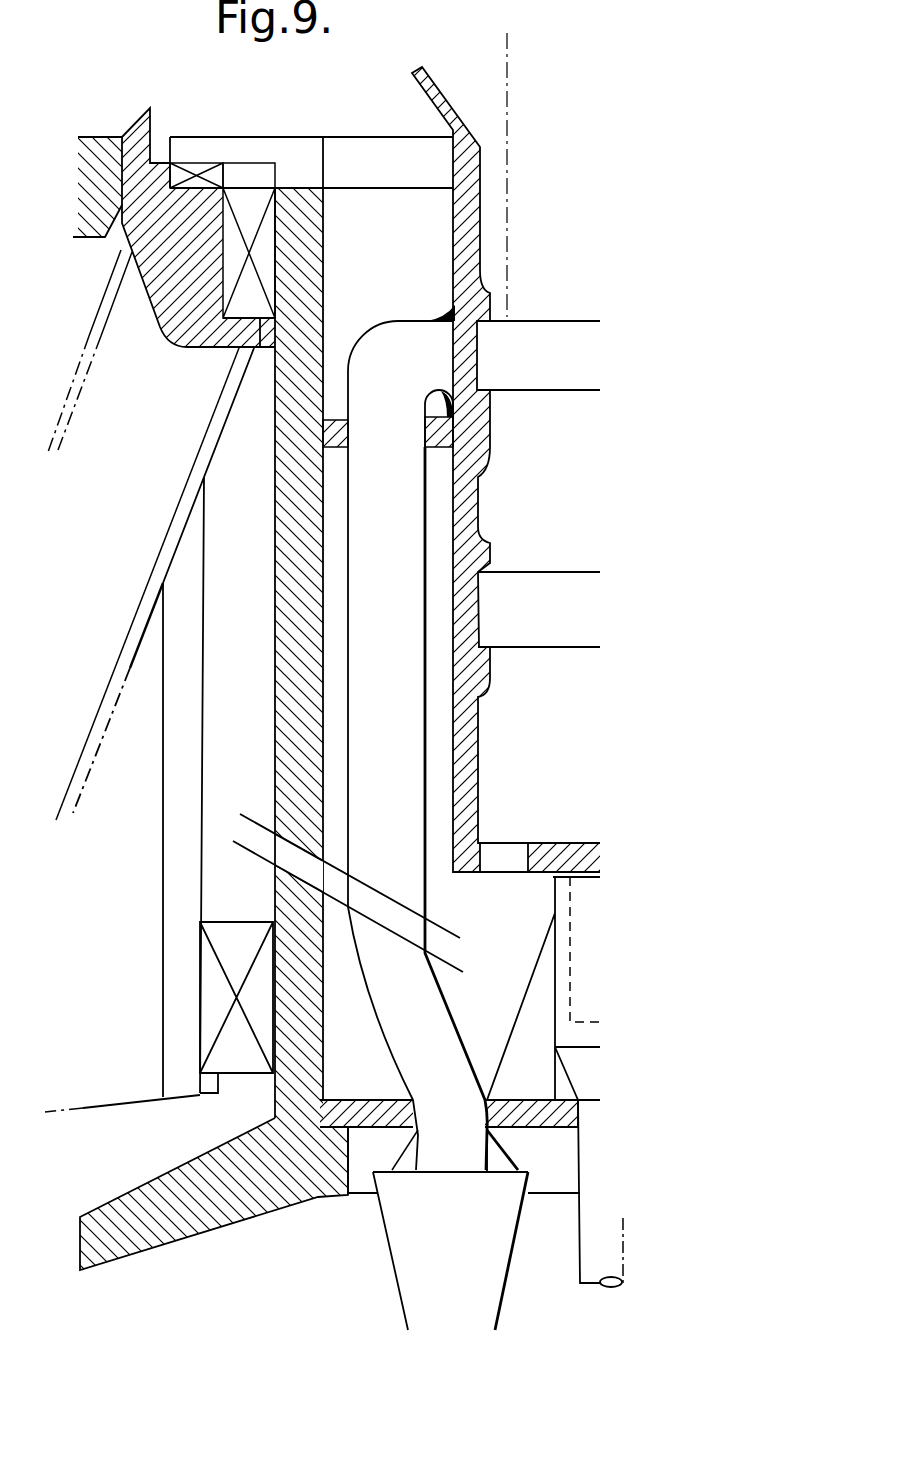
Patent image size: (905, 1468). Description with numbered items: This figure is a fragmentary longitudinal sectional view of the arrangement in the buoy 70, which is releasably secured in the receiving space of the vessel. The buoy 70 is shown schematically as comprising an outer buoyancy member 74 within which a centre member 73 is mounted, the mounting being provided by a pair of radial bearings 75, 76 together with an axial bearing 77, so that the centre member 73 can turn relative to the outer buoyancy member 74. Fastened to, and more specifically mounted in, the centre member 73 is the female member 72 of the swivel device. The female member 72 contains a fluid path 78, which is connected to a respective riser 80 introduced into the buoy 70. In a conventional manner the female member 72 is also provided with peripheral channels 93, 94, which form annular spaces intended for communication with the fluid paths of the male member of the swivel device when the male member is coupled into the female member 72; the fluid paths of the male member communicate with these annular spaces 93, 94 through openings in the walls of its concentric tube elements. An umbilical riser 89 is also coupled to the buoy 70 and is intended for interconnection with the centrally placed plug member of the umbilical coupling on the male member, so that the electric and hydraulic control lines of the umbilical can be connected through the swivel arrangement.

The buoy 70 is at (267, 1220).
The female member 72 is at (478, 790).
The centre member 73 is at (285, 632).
The outer buoyancy member 74 is at (108, 1077).
The radial bearing 75 is at (207, 963).
The radial bearing 76 is at (222, 348).
The axial bearing 77 is at (200, 167).
The fluid path 78 is at (463, 358).
The riser 80 is at (412, 1042).
The umbilical riser 89 is at (588, 1232).
The peripheral channel 93 is at (550, 372).
The peripheral channel 94 is at (533, 618).